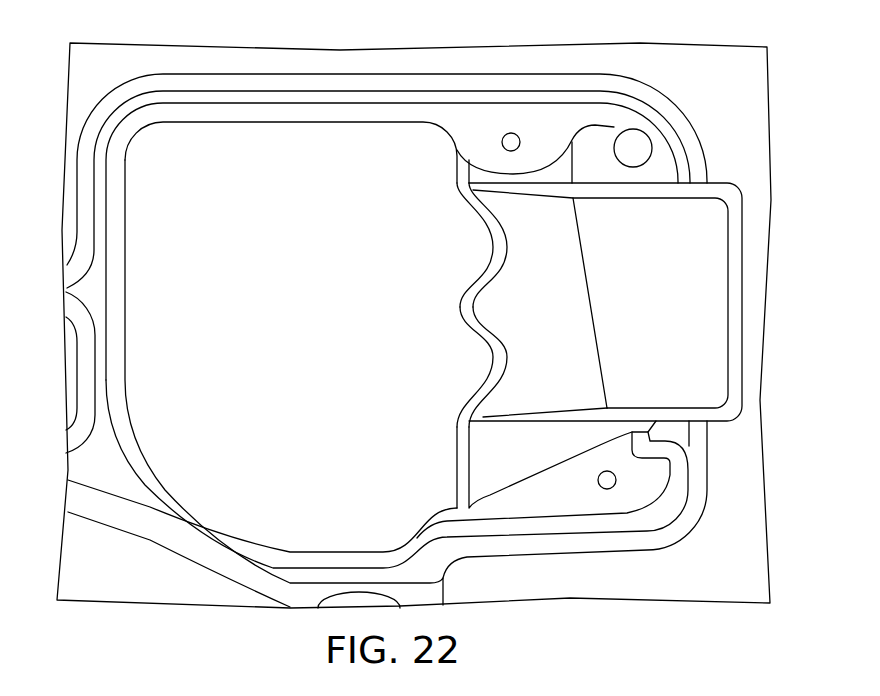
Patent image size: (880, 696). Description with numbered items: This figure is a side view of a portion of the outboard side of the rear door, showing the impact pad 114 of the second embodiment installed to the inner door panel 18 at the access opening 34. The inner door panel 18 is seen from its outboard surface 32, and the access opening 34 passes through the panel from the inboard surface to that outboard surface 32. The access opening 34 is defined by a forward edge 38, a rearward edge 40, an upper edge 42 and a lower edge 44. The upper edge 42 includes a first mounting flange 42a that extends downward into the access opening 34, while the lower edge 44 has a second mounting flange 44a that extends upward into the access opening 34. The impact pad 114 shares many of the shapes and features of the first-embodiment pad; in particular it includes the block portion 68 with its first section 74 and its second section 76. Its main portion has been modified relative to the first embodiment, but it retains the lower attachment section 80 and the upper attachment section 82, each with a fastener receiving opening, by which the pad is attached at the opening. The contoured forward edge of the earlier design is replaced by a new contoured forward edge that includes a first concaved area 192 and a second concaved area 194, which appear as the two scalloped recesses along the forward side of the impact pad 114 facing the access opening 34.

The inner door panel 18 is at (738, 40).
The outboard surface 32 is at (688, 73).
The access opening 34 is at (232, 123).
The forward edge 38 is at (127, 287).
The rearward edge 40 is at (619, 128).
The upper edge 42 is at (322, 123).
The first mounting flange 42a is at (480, 138).
The lower edge 44 is at (322, 550).
The second mounting flange 44a is at (628, 488).
The block portion 68 is at (687, 257).
The first section 74 is at (697, 332).
The second section 76 is at (548, 372).
The lower attachment section 80 is at (495, 462).
The upper attachment section 82 is at (557, 171).
The impact pad 114 is at (437, 293).
The first concaved area 192 is at (490, 237).
The second concaved area 194 is at (490, 353).